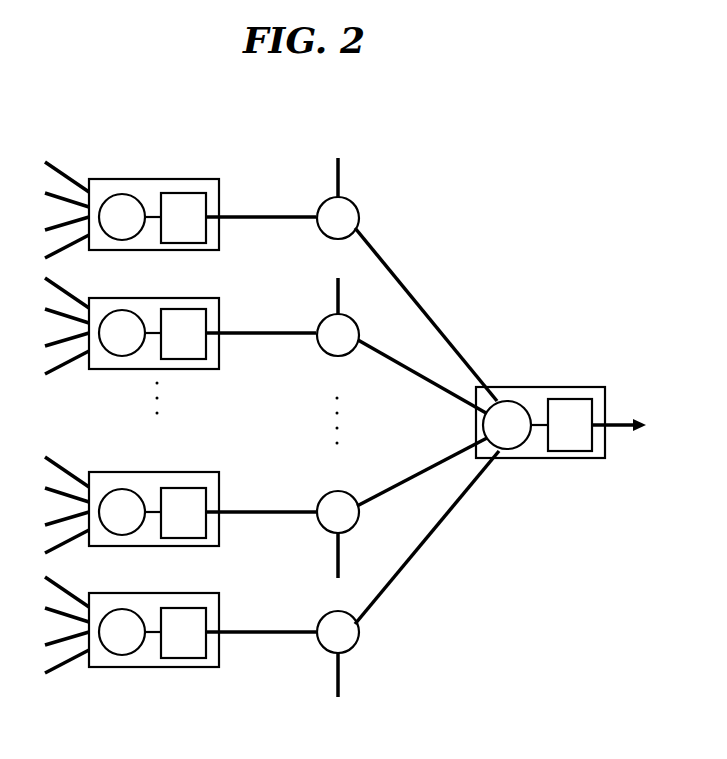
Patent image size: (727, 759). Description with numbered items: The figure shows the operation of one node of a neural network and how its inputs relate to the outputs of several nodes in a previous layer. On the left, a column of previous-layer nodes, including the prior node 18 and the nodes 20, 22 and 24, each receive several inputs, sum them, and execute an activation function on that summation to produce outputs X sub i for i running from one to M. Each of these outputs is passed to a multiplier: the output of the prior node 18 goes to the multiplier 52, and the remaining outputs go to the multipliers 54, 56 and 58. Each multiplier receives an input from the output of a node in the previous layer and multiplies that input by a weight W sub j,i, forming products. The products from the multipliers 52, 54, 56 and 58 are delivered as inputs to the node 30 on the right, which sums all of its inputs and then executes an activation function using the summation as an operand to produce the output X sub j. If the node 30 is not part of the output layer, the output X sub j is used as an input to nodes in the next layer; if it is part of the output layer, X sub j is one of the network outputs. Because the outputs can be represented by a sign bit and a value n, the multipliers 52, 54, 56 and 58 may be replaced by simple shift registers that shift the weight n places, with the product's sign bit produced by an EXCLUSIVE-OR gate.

The prior node 18 is at (155, 180).
The node 20 is at (117, 369).
The node 22 is at (189, 472).
The node 24 is at (152, 667).
The node 30 is at (539, 387).
The multiplier 52 is at (322, 199).
The multiplier 54 is at (327, 313).
The multiplier 56 is at (350, 491).
The multiplier 58 is at (322, 611).